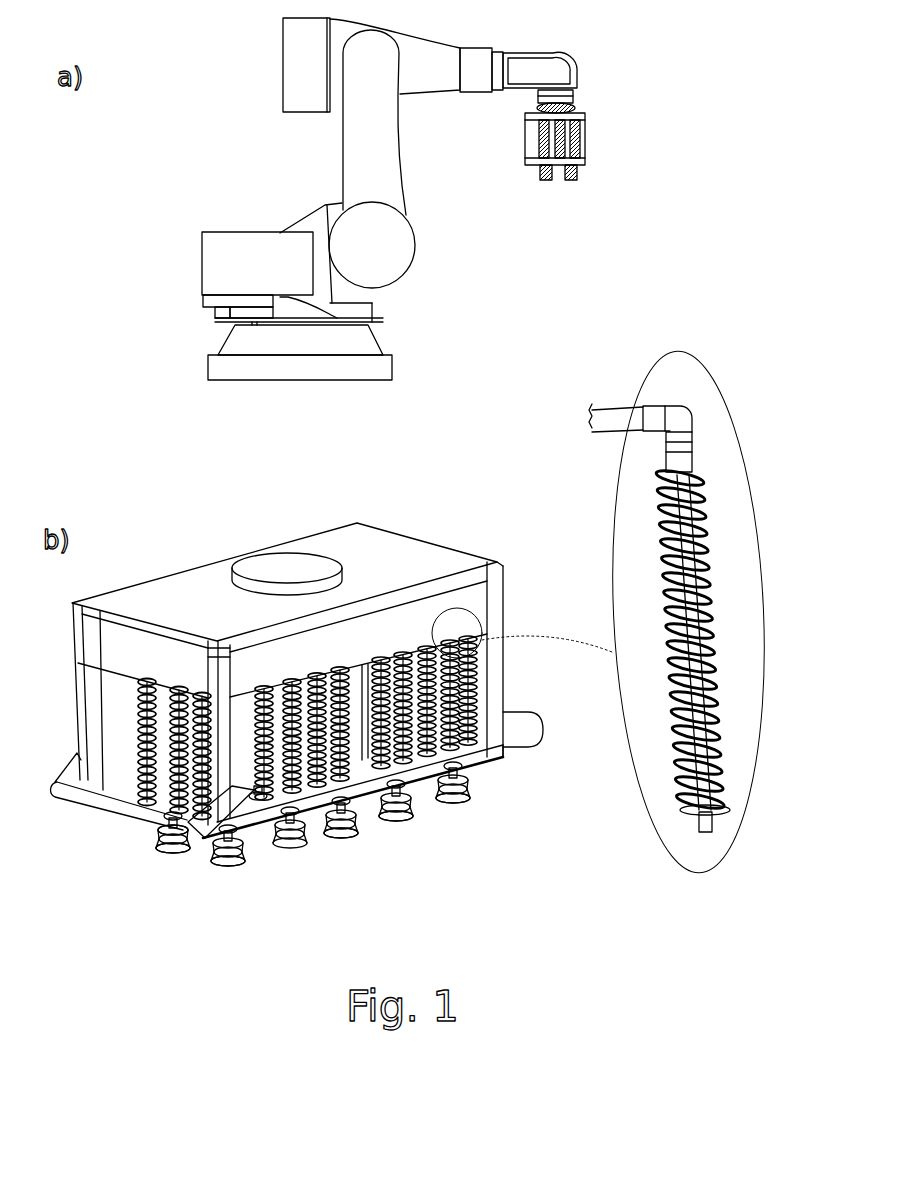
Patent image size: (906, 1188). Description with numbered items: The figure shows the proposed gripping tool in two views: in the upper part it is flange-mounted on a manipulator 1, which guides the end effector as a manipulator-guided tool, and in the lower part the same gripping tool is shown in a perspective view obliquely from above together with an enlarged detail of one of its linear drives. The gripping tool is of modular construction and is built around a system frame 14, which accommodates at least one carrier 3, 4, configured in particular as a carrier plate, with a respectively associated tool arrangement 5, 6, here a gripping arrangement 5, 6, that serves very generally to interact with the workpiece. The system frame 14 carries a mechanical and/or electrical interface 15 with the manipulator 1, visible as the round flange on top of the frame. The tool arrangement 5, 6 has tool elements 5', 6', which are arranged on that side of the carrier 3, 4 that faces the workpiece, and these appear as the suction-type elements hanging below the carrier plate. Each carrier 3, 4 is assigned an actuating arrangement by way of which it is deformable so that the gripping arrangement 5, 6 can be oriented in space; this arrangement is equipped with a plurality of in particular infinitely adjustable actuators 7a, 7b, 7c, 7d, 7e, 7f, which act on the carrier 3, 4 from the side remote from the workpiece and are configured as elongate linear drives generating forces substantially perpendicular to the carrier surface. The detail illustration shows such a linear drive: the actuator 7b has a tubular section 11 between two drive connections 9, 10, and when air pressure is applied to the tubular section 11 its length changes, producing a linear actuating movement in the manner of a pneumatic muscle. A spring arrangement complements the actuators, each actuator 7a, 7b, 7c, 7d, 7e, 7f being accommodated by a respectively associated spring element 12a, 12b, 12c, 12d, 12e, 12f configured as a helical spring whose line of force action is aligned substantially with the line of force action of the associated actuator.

The manipulator 1 is at (432, 269).
The carrier 3 is at (433, 767).
The carrier 4 is at (260, 797).
The tool arrangement 5 is at (616, 155).
The tool arrangement 6 is at (616, 155).
The tool element 5' is at (325, 863).
The tool element 6' is at (145, 870).
The actuator 7a is at (483, 832).
The actuator 7b is at (610, 622).
The actuator 7c is at (333, 874).
The actuator 7d is at (422, 857).
The actuator 7e is at (111, 835).
The actuator 7f is at (258, 901).
The drive connection 9 is at (705, 438).
The drive connection 10 is at (719, 842).
The tubular section 11 is at (680, 565).
The spring element 12a is at (440, 770).
The spring element 12b is at (479, 744).
The spring element 12c is at (310, 796).
The spring element 12d is at (365, 780).
The spring element 12e is at (193, 808).
The spring element 12f is at (260, 820).
The system frame 14 is at (527, 136).
The interface 15 is at (277, 567).